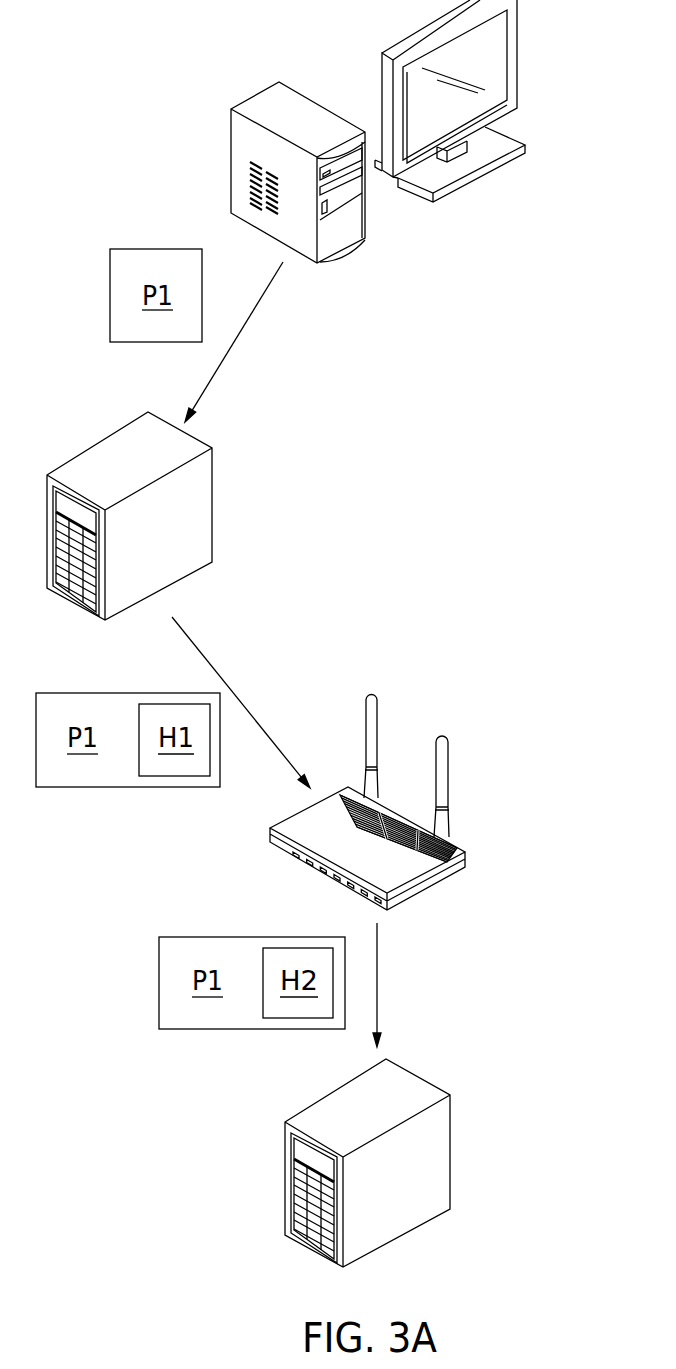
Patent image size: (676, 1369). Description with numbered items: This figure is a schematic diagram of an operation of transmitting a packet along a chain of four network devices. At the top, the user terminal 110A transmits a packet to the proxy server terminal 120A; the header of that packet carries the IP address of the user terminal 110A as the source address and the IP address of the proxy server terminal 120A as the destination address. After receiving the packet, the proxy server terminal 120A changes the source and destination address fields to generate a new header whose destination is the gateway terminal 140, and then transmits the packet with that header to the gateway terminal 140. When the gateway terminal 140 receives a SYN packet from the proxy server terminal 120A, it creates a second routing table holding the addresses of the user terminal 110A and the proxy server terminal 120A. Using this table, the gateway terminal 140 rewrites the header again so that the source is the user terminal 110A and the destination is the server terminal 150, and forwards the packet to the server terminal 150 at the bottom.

The user terminal 110A is at (232, 137).
The proxy server terminal 120A is at (212, 502).
The gateway terminal 140 is at (467, 847).
The server terminal 150 is at (450, 1150).